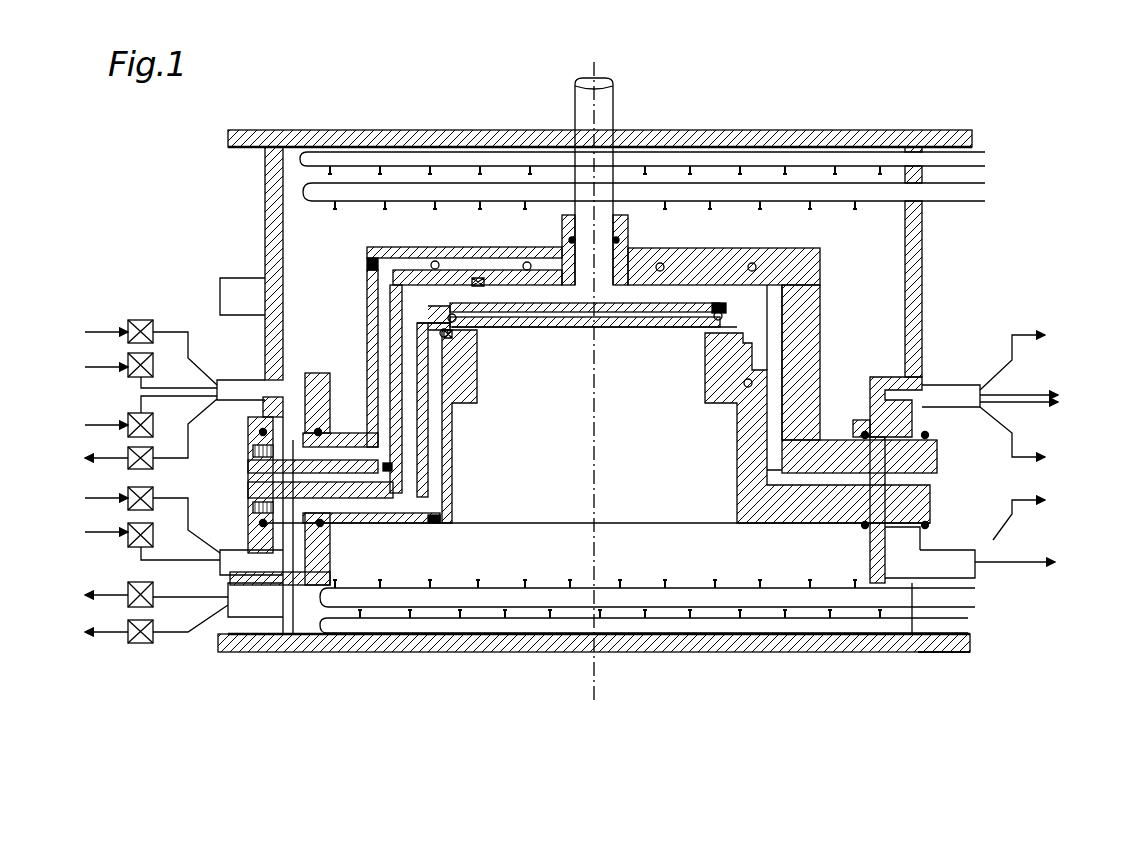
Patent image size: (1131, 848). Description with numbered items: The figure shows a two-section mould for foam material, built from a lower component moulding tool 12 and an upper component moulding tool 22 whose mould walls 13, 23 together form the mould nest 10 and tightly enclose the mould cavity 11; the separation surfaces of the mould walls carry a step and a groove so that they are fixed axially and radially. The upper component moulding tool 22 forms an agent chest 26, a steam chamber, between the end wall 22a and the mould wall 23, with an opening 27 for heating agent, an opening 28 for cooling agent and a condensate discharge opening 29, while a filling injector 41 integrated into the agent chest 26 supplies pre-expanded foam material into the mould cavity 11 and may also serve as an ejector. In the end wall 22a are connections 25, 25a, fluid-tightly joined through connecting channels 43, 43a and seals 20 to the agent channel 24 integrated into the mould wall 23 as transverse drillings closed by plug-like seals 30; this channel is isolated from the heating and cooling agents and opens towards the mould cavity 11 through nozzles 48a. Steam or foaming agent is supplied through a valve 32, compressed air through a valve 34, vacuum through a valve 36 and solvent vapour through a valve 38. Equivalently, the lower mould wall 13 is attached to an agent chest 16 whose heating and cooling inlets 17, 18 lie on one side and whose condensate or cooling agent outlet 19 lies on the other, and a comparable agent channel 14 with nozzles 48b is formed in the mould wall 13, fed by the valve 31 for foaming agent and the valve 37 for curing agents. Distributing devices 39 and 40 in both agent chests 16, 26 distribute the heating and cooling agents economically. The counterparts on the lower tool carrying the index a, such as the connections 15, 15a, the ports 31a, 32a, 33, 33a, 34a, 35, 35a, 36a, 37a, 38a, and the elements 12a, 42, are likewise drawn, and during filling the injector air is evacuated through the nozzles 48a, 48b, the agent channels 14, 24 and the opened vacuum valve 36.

The mould nest 10 is at (448, 327).
The mould cavity 11 is at (753, 297).
The lower component moulding tool 12 is at (955, 658).
The bottom plate surface 12a is at (492, 644).
The mould wall 13 is at (477, 385).
The agent channel 14 is at (590, 330).
The inlet port 15 is at (228, 550).
The inlet port 15a is at (962, 563).
The agent chest 16 is at (595, 425).
The heating inlet 17 is at (968, 628).
The cooling inlet 18 is at (928, 560).
The condensate or cooling agent outlet 19 is at (240, 617).
The seals 20 is at (320, 430).
The upper component moulding tool 22 is at (940, 127).
The end wall 22a is at (663, 145).
The mould wall 23 is at (516, 262).
The agent channel 24 is at (367, 286).
The connection 25 is at (235, 390).
The connection 25a is at (948, 392).
The agent chest 26 is at (593, 263).
The opening for admission of heating agent 27 is at (985, 158).
The opening for admission of cooling agent 28 is at (985, 195).
The condensate discharge opening 29 is at (232, 299).
The plug-like seals 30 is at (367, 264).
The valve 31 is at (128, 538).
The valve line 31a is at (1038, 550).
The valve 32 is at (128, 363).
The valve line 32a is at (1040, 381).
The valve 33 is at (128, 600).
The valve line 33a is at (975, 598).
The valve 34 is at (128, 421).
The valve line 34a is at (1040, 412).
The valve 35 is at (140, 643).
The valve line 35a is at (968, 627).
The valve 36 is at (128, 453).
The valve line 36a is at (1043, 432).
The valve 37 is at (128, 503).
The valve line 37a is at (1047, 518).
The valve 38 is at (140, 320).
The valve line 38a is at (1040, 351).
The distributing device 39 is at (845, 160).
The distributing device 40 is at (800, 192).
The filling injector 41 is at (606, 104).
The cylinder wall 42 is at (297, 557).
The connecting channel 43 is at (290, 402).
The connecting channel 43a is at (893, 407).
The nozzles 48a is at (477, 280).
The nozzles 48b is at (726, 300).